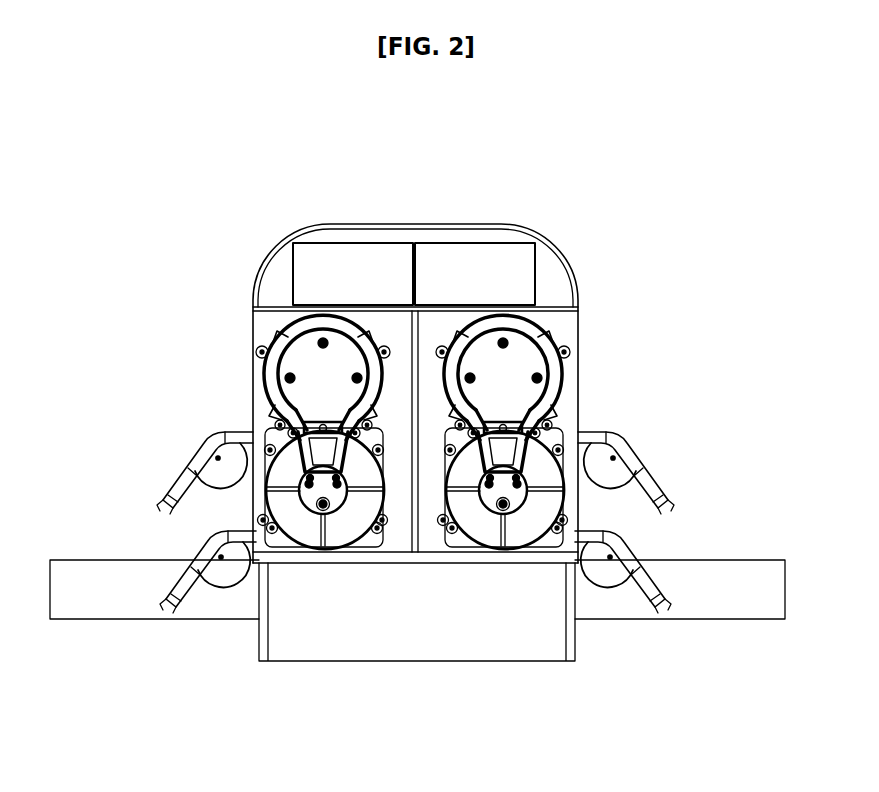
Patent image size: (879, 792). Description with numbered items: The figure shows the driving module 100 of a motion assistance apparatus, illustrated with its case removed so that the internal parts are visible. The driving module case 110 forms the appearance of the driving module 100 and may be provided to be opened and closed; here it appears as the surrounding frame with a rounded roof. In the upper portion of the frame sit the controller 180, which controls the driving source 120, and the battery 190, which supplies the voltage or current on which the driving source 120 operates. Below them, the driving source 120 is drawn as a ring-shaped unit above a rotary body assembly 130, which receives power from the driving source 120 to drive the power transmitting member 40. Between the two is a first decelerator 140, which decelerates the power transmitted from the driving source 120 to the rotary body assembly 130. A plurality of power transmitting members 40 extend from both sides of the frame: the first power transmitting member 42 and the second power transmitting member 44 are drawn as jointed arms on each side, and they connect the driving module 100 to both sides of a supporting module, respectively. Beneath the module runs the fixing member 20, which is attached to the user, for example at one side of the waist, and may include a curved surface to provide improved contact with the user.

The driving module 100 is at (576, 211).
The driving module case 110 is at (253, 327).
The driving source 120 is at (555, 372).
The rotary body assembly 130 is at (488, 536).
The first decelerator 140 is at (557, 423).
The controller 180 is at (353, 248).
The battery 190 is at (460, 248).
The fixing member 20 is at (218, 614).
The power transmitting member 40 is at (752, 395).
The first power transmitting member 42 is at (665, 478).
The second power transmitting member 44 is at (667, 582).